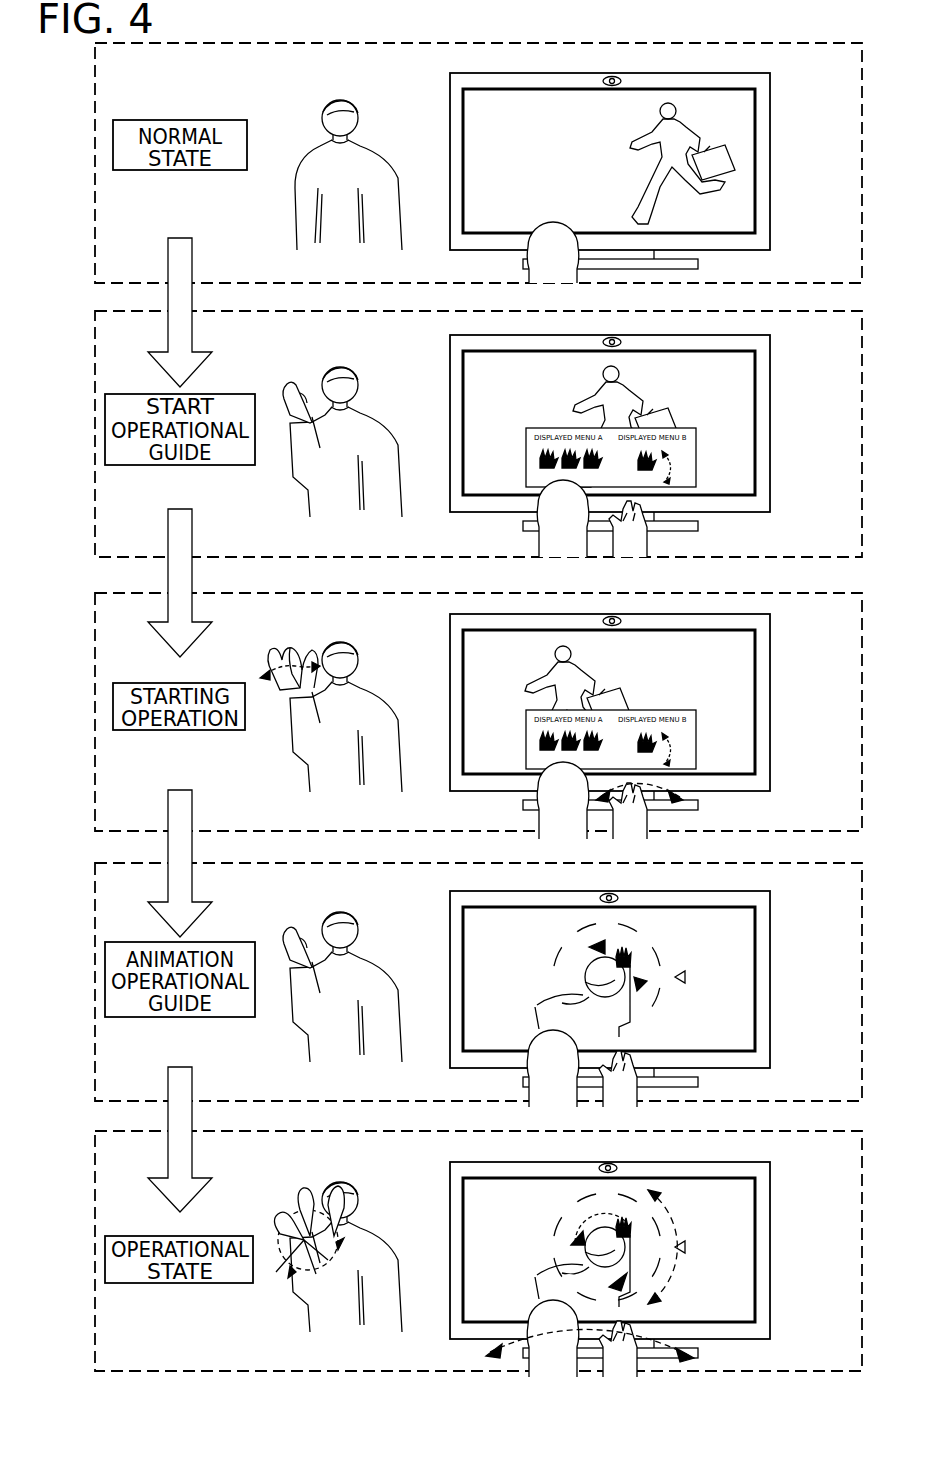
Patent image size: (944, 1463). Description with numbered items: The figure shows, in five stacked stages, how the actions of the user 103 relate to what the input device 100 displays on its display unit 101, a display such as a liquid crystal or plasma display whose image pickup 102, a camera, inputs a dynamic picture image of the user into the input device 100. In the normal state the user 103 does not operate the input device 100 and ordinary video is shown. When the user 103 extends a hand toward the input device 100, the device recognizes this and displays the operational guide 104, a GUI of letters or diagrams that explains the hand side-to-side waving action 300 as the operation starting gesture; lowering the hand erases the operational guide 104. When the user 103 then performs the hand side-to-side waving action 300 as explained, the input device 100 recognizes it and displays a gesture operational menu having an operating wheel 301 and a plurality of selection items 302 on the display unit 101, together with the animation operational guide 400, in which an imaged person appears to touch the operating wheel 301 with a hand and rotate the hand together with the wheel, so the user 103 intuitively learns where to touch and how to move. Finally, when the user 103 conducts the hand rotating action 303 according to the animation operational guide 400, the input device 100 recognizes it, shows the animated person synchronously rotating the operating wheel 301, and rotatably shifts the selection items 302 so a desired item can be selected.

The input device 100 is at (771, 101).
The display unit 101 is at (757, 158).
The image pickup 102 is at (621, 80).
The user 103 is at (379, 148).
The operational guide 104 is at (697, 456).
The hand side-to-side waving action 300 is at (275, 665).
The operating wheel 301 is at (596, 990).
The selection items 302 is at (670, 972).
The hand rotating action 303 is at (283, 1230).
The animation operational guide 400 is at (548, 993).